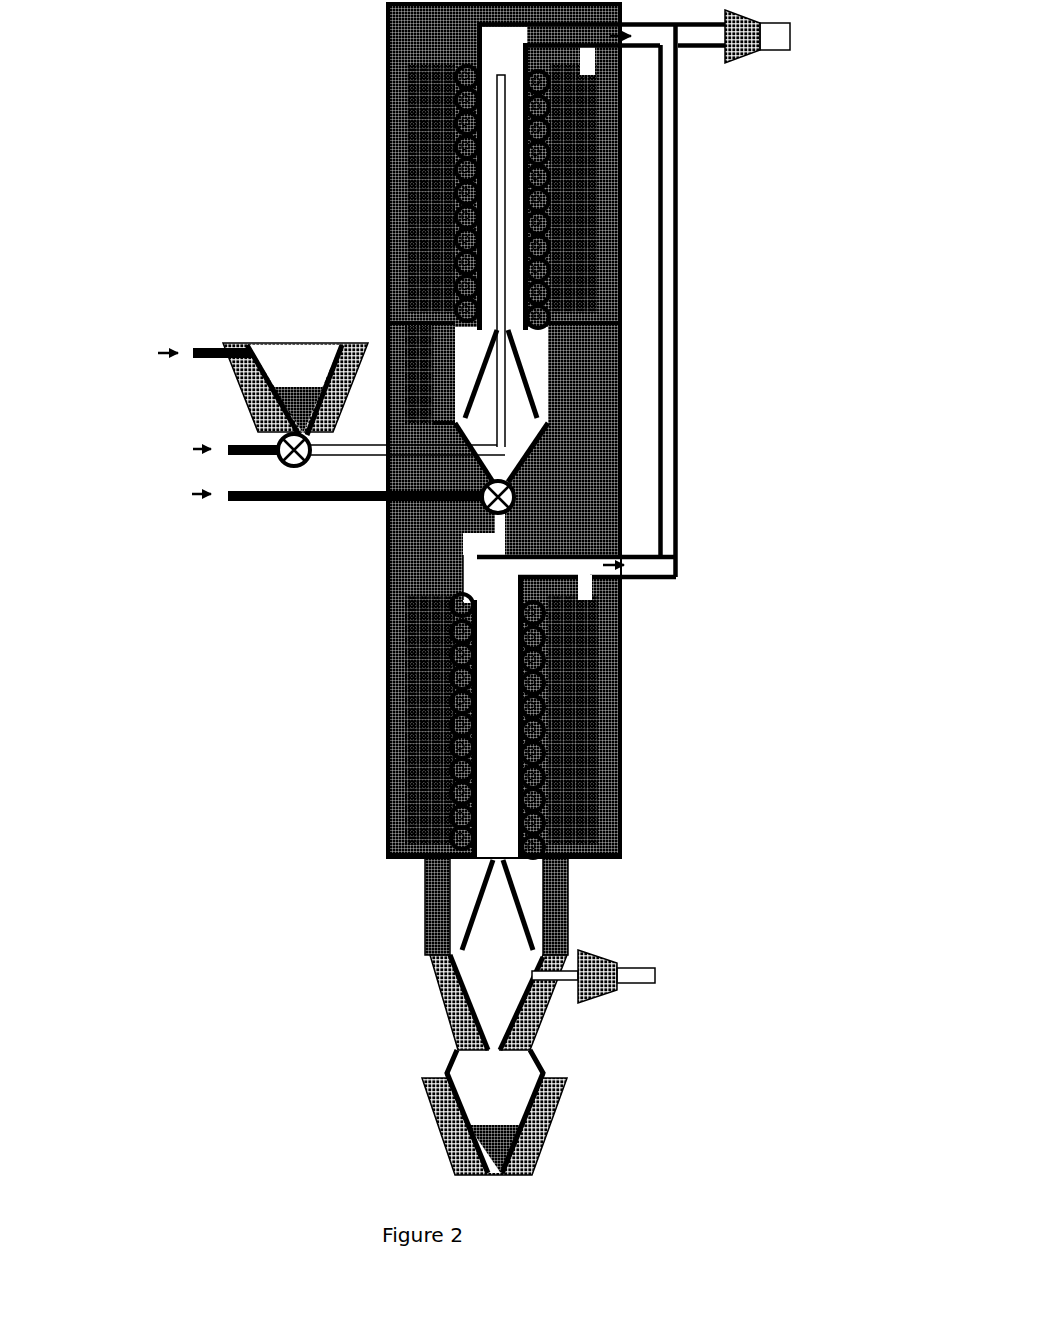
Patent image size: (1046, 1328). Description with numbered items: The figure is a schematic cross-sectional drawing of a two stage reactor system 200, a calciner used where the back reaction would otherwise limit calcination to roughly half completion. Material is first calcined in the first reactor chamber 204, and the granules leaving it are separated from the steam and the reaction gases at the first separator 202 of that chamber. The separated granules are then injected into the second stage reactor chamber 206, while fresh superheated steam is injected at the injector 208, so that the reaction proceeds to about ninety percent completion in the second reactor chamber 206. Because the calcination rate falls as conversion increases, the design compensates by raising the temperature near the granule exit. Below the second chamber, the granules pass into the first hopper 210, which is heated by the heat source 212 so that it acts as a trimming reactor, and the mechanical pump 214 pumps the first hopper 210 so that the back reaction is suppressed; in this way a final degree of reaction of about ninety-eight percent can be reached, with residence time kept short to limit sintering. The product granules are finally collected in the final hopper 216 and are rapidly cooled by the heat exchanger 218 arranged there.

The two stage reactor system 200 is at (355, 430).
The first separator 202 is at (538, 375).
The first reactor chamber 204 is at (568, 186).
The second stage reactor chamber 206 is at (562, 722).
The injector 208 is at (455, 604).
The first hopper 210 is at (447, 994).
The heat source 212 is at (540, 1018).
The mechanical pump 214 is at (610, 946).
The final hopper 216 is at (450, 1121).
The heat exchanger 218 is at (538, 1142).